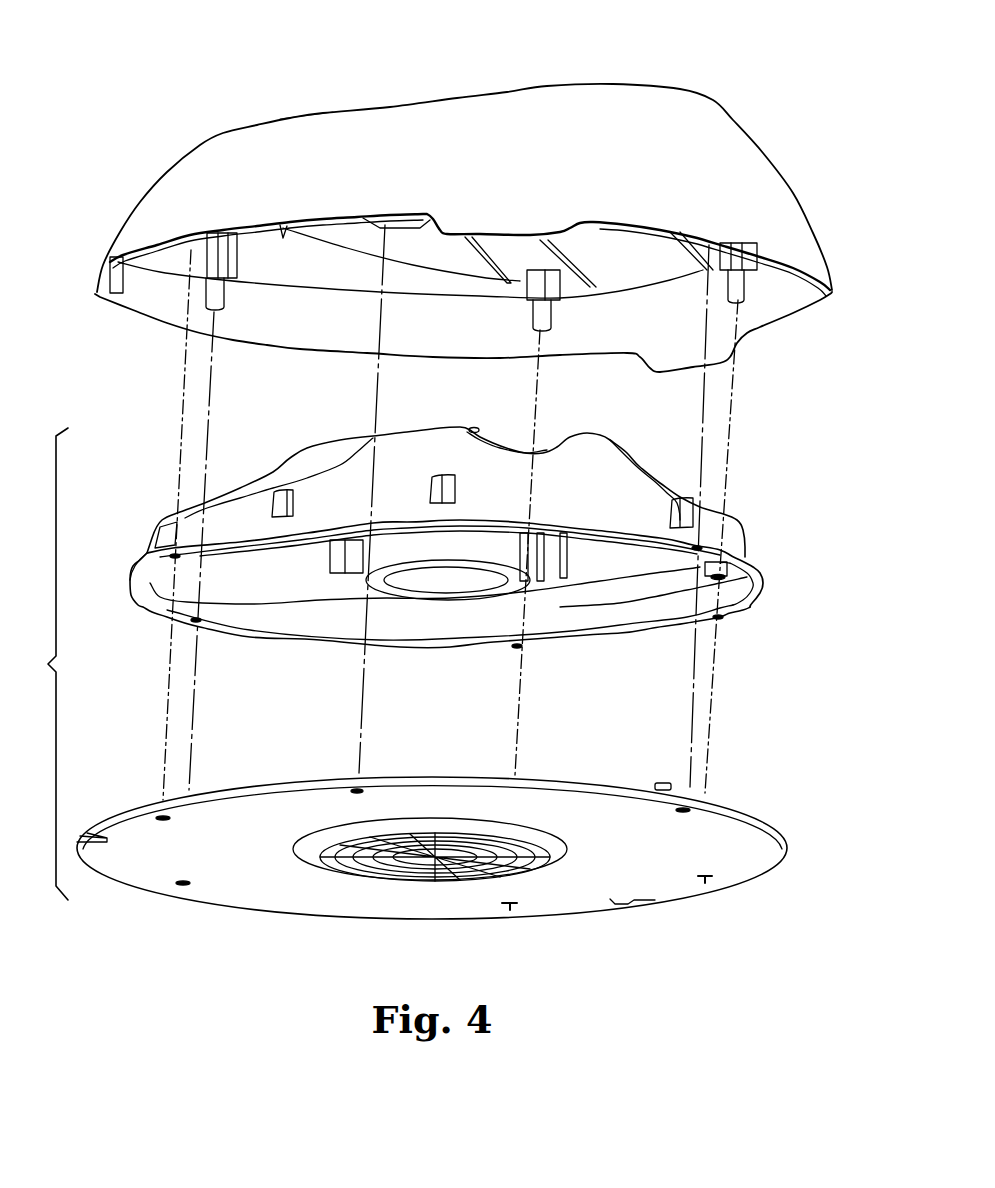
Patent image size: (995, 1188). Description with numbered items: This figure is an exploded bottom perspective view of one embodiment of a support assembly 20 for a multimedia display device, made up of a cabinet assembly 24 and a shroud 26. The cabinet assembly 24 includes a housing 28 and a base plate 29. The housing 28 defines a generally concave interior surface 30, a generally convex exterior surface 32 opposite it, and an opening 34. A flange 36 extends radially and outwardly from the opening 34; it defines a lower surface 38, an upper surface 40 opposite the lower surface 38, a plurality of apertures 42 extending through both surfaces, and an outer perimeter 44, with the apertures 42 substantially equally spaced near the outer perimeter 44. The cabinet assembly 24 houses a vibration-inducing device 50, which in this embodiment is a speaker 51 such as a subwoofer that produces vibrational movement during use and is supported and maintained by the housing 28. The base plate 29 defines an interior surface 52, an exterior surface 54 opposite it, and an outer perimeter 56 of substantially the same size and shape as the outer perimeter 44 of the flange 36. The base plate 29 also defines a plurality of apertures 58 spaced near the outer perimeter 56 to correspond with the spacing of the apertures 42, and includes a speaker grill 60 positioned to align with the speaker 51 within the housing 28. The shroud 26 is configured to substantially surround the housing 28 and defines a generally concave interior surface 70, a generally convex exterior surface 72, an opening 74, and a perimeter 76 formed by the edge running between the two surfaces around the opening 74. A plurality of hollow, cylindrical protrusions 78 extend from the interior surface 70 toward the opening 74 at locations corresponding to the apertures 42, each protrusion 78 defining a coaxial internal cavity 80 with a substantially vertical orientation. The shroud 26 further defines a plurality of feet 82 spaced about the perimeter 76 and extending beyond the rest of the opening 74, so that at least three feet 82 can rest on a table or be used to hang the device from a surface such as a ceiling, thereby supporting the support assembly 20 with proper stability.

The support assembly 20 is at (203, 68).
The cabinet assembly 24 is at (40, 664).
The shroud 26 is at (728, 116).
The housing 28 is at (752, 510).
The base plate 29 is at (764, 852).
The interior surface 30 is at (684, 598).
The exterior surface 32 is at (648, 476).
The opening 34 is at (293, 600).
The flange 36 is at (760, 590).
The lower surface 38 is at (173, 618).
The upper surface 40 is at (160, 545).
The apertures 42 is at (516, 648).
The outer perimeter 44 is at (133, 577).
The vibration-inducing device 50 is at (397, 605).
The speaker 51 is at (435, 584).
The interior surface 52 is at (745, 812).
The exterior surface 54 is at (744, 877).
The outer perimeter 56 is at (554, 780).
The apertures 58 is at (511, 912).
The speaker grill 60 is at (420, 845).
The interior surface 70 is at (810, 302).
The exterior surface 72 is at (783, 212).
The opening 74 is at (278, 317).
The perimeter 76 is at (812, 291).
The protrusions 78 is at (548, 296).
The internal cavity 80 is at (541, 332).
The feet 82 is at (566, 229).